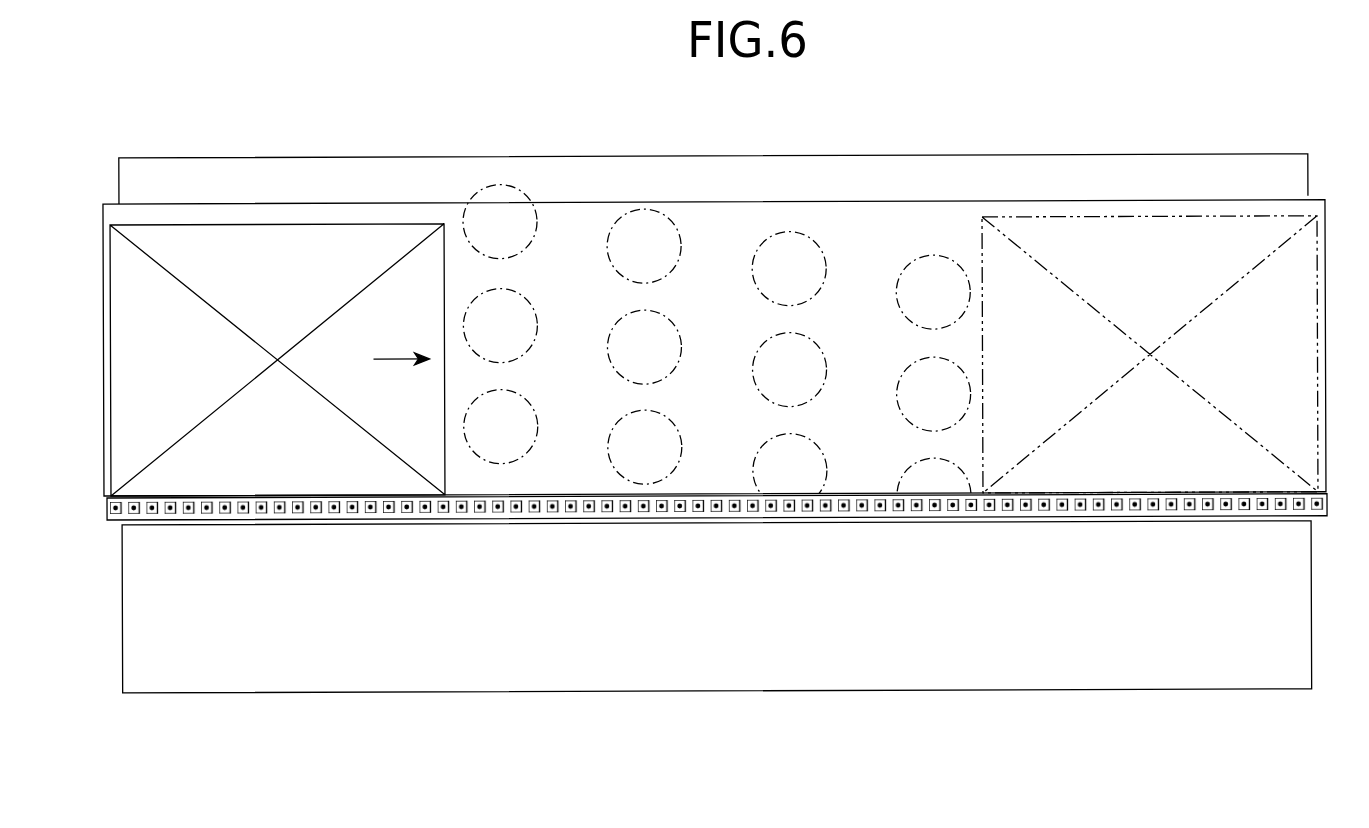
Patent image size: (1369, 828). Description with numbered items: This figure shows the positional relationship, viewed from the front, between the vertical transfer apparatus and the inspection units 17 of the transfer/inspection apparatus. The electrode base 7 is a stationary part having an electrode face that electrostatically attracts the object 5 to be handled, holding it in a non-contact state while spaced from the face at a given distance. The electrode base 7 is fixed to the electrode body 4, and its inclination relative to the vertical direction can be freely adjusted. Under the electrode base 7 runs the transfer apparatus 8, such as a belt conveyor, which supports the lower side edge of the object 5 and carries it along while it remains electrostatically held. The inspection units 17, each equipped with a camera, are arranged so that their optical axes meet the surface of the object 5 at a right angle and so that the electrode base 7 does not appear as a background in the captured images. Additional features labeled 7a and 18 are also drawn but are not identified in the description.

The electrode body 4 is at (1151, 156).
The object to be handled 5 is at (192, 224).
The electrode base 7 is at (893, 203).
The chamber interior region 7a is at (822, 220).
The transfer apparatus 8 is at (108, 505).
The inspection unit 17 is at (520, 196).
The heater element 18 is at (490, 228).